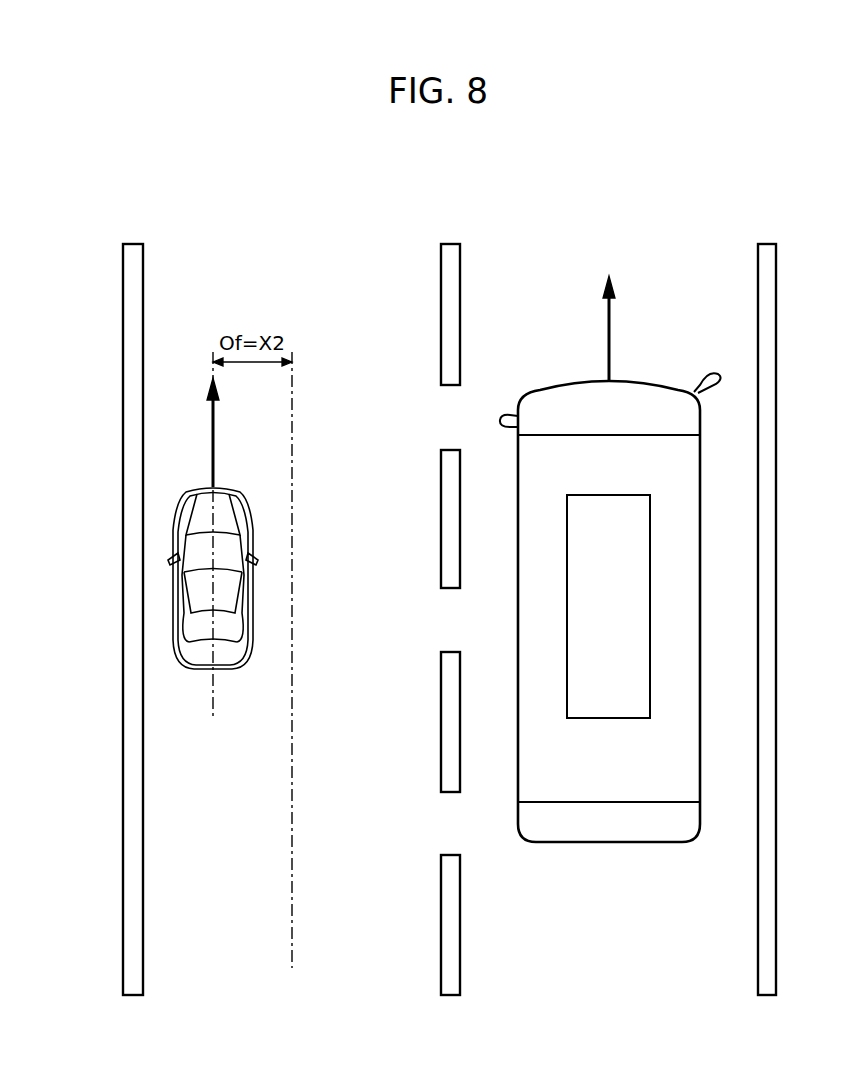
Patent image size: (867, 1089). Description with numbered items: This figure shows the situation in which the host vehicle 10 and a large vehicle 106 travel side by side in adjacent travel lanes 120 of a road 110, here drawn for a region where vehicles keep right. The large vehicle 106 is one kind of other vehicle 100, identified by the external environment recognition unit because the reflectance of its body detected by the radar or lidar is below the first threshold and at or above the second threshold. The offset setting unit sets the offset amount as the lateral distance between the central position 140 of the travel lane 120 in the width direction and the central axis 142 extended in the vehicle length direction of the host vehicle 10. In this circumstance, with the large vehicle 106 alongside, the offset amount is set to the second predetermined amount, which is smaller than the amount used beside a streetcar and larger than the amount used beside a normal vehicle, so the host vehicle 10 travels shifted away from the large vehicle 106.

The road 110 is at (630, 188).
The travel lane 120 is at (441, 235).
The host vehicle 10 is at (175, 521).
The central axis 142 is at (213, 604).
The central position 140 is at (292, 788).
The large vehicle 106 is at (610, 604).
The other vehicle 100 is at (607, 843).